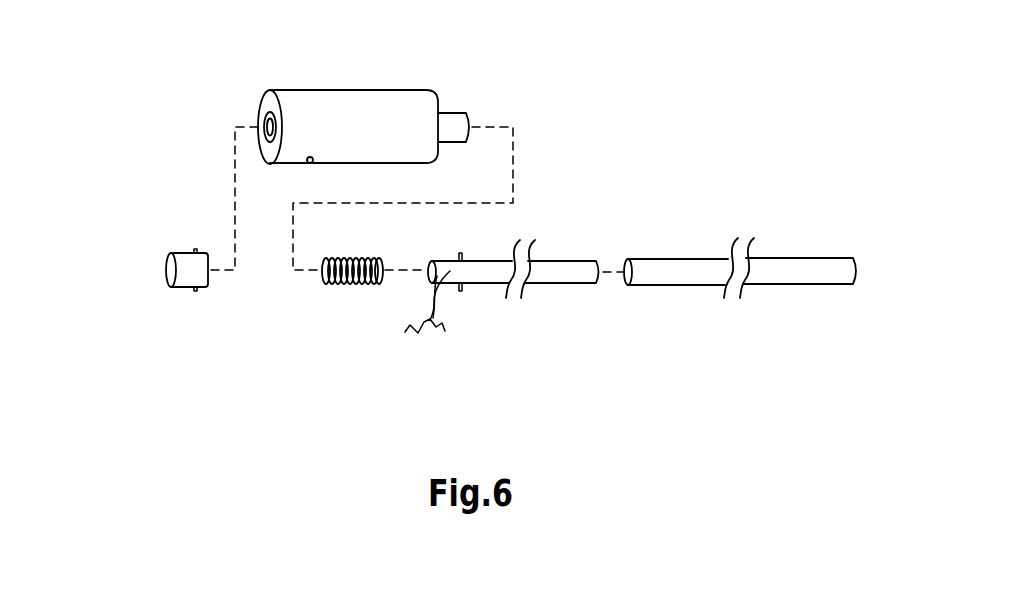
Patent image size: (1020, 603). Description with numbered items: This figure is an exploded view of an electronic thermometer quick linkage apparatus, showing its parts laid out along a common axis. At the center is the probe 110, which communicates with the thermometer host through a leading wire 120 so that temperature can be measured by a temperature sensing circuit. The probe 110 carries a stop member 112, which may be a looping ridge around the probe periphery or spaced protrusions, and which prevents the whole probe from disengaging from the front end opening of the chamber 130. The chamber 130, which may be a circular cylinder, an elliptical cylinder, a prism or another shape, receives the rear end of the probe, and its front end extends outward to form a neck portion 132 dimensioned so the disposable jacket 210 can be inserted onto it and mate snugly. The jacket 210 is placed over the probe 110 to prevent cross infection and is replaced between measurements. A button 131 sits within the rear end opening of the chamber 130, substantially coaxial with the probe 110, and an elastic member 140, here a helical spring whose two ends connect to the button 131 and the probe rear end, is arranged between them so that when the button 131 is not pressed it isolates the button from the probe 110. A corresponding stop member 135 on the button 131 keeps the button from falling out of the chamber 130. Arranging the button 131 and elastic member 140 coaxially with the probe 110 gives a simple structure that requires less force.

The probe 110 is at (558, 272).
The stop member 112 is at (466, 255).
The leading wire 120 is at (437, 308).
The chamber 130 is at (355, 119).
The button 131 is at (187, 265).
The neck portion 132 is at (460, 132).
The stop member 135 is at (193, 248).
The elastic member 140 is at (345, 282).
The jacket 210 is at (800, 273).